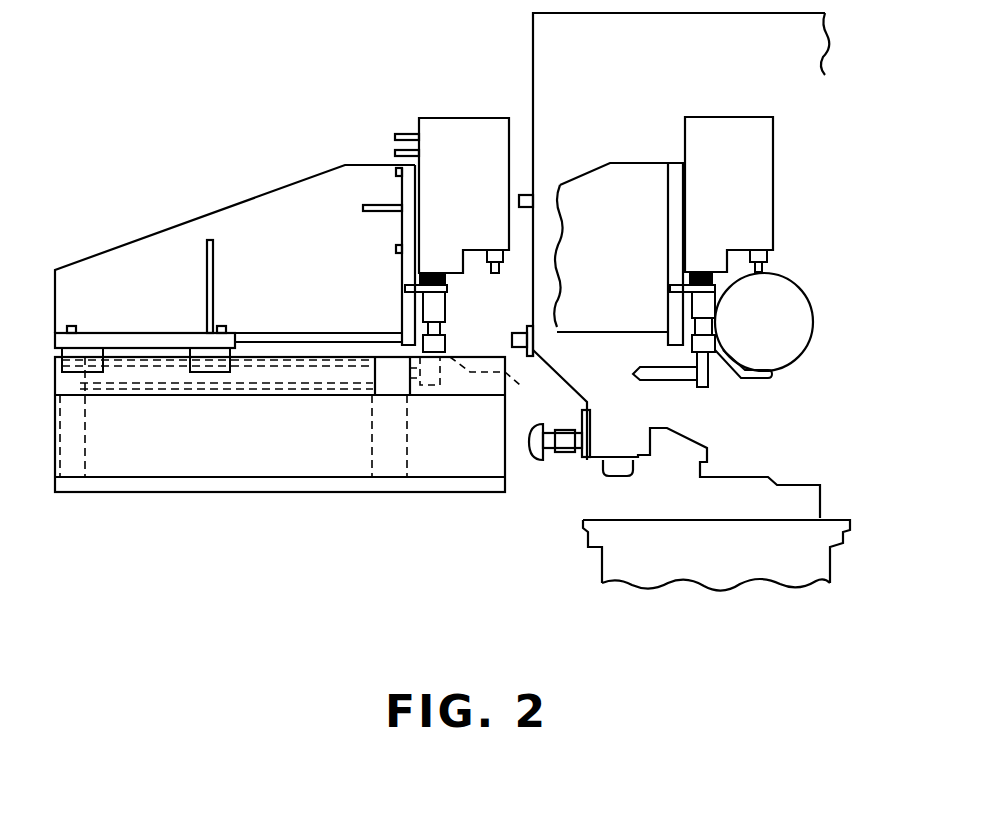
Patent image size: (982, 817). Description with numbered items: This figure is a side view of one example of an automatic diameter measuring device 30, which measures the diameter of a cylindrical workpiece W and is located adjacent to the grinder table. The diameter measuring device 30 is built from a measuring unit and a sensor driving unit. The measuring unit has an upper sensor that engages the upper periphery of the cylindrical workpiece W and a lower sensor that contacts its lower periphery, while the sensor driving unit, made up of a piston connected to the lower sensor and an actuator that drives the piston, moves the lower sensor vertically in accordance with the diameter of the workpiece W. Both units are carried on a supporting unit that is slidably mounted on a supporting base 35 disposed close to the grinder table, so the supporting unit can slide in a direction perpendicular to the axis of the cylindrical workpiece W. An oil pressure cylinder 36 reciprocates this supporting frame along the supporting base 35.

The diameter measuring device 30 is at (347, 164).
The supporting base 35 is at (441, 405).
The oil pressure cylinder 36 is at (252, 382).
The cylindrical workpiece W is at (812, 300).